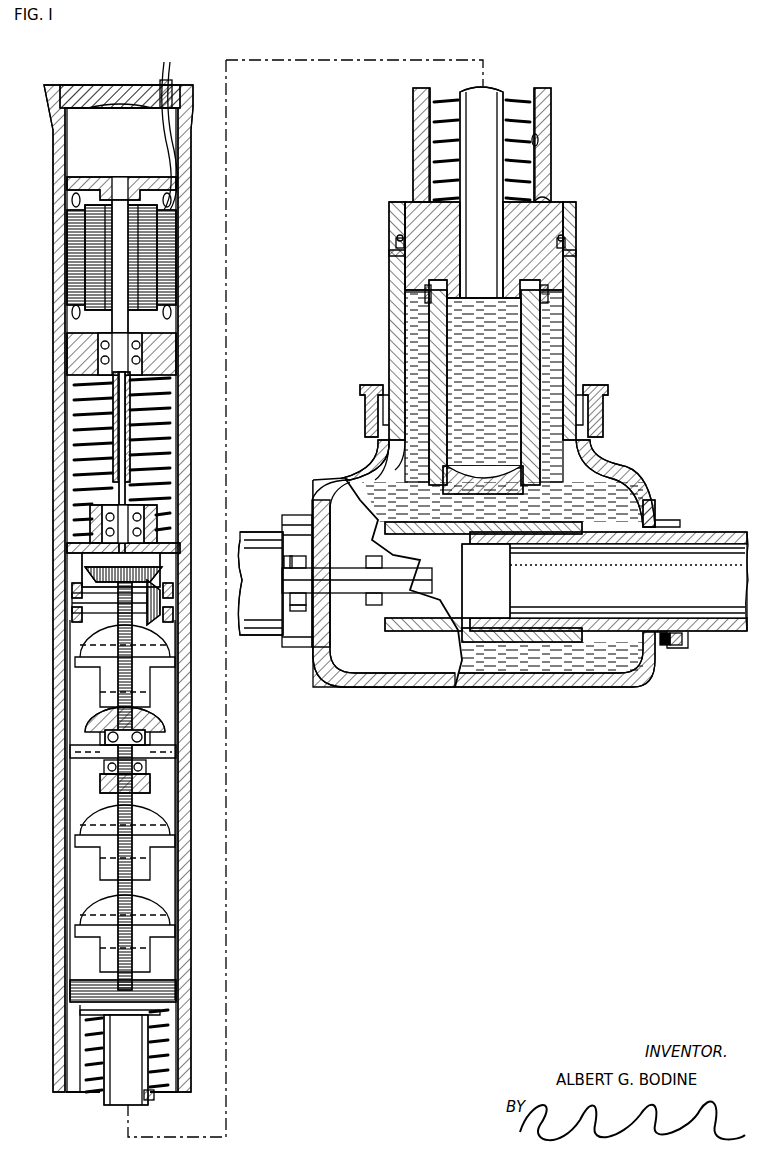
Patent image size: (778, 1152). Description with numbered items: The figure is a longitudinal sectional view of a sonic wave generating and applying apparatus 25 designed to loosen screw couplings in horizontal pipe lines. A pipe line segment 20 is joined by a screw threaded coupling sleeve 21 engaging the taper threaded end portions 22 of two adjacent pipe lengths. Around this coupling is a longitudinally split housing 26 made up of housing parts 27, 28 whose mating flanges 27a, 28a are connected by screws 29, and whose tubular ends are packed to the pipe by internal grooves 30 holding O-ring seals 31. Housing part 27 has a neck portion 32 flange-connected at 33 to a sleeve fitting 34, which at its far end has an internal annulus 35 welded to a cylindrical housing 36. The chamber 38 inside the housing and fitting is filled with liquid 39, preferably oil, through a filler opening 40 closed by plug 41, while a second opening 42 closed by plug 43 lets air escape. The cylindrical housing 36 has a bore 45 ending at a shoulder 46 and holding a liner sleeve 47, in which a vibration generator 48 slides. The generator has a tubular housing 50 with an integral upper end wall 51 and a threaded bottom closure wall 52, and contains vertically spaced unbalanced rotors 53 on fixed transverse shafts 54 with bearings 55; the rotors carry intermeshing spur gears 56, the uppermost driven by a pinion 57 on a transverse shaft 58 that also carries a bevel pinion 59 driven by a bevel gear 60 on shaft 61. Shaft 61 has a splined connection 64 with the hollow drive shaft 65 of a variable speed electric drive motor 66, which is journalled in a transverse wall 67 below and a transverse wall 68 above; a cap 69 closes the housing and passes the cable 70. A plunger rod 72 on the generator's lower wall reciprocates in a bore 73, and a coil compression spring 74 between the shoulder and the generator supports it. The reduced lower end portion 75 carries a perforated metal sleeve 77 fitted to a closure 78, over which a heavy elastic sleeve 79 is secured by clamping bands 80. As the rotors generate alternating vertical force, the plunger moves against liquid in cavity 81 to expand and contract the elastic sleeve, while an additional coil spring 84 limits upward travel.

The pipe line segment 20 is at (708, 528).
The coupling sleeve 21 is at (478, 640).
The taper threaded end portions 22 is at (505, 595).
The sonic wave generating and applying apparatus 25 is at (52, 152).
The housing 26 is at (318, 486).
The housing part 27 is at (292, 515).
The mating flange 27a is at (332, 572).
The housing part 28 is at (395, 682).
The mating flange 28a is at (336, 598).
The screws 29 is at (292, 556).
The internal grooves 30 is at (668, 650).
The O-ring seals 31 is at (680, 648).
The neck portion 32 is at (590, 452).
The flange connection 33 is at (610, 418).
The sleeve fitting 34 is at (398, 318).
The internal annulus 35 is at (404, 214).
The cylindrical housing 36 is at (58, 1050).
The chamber 38 is at (598, 478).
The liquid 39 is at (635, 494).
The filler opening 40 is at (570, 242).
The plug 41 is at (572, 252).
The second opening 42 is at (396, 242).
The plug 43 is at (392, 254).
The bore 45 is at (536, 136).
The shoulder 46 is at (540, 196).
The liner sleeve 47 is at (70, 1078).
The vibration generator 48 is at (78, 690).
The tubular housing 50 is at (72, 740).
The upper end wall 51 is at (70, 548).
The bottom closure wall 52 is at (90, 982).
The unbalanced rotors 53 is at (150, 726).
The transverse shafts 54 is at (80, 765).
The bearings 55 is at (150, 745).
The spur gears 56 is at (115, 708).
The pinion 57 is at (118, 660).
The transverse shaft 58 is at (80, 604).
The bevel pinion 59 is at (160, 576).
The bevel gear 60 is at (74, 588).
The shaft 61 is at (118, 500).
The splined connection 64 is at (118, 423).
The hollow drive shaft 65 is at (70, 388).
The electric drive motor 66 is at (80, 238).
The transverse wall 67 is at (66, 352).
The transverse wall 68 is at (64, 184).
The cap 69 is at (82, 88).
The cable 70 is at (172, 64).
The plunger rod 72 is at (128, 1098).
The bore 73 is at (504, 218).
The coil compression spring 74 is at (86, 1020).
The reduced lower end portion 75 is at (430, 297).
The perforated metal sleeve 77 is at (578, 316).
The closure 78 is at (470, 494).
The elastic sleeve 79 is at (398, 447).
The clamping bands 80 is at (545, 294).
The cavity 81 is at (545, 370).
The coil spring 84 is at (74, 448).